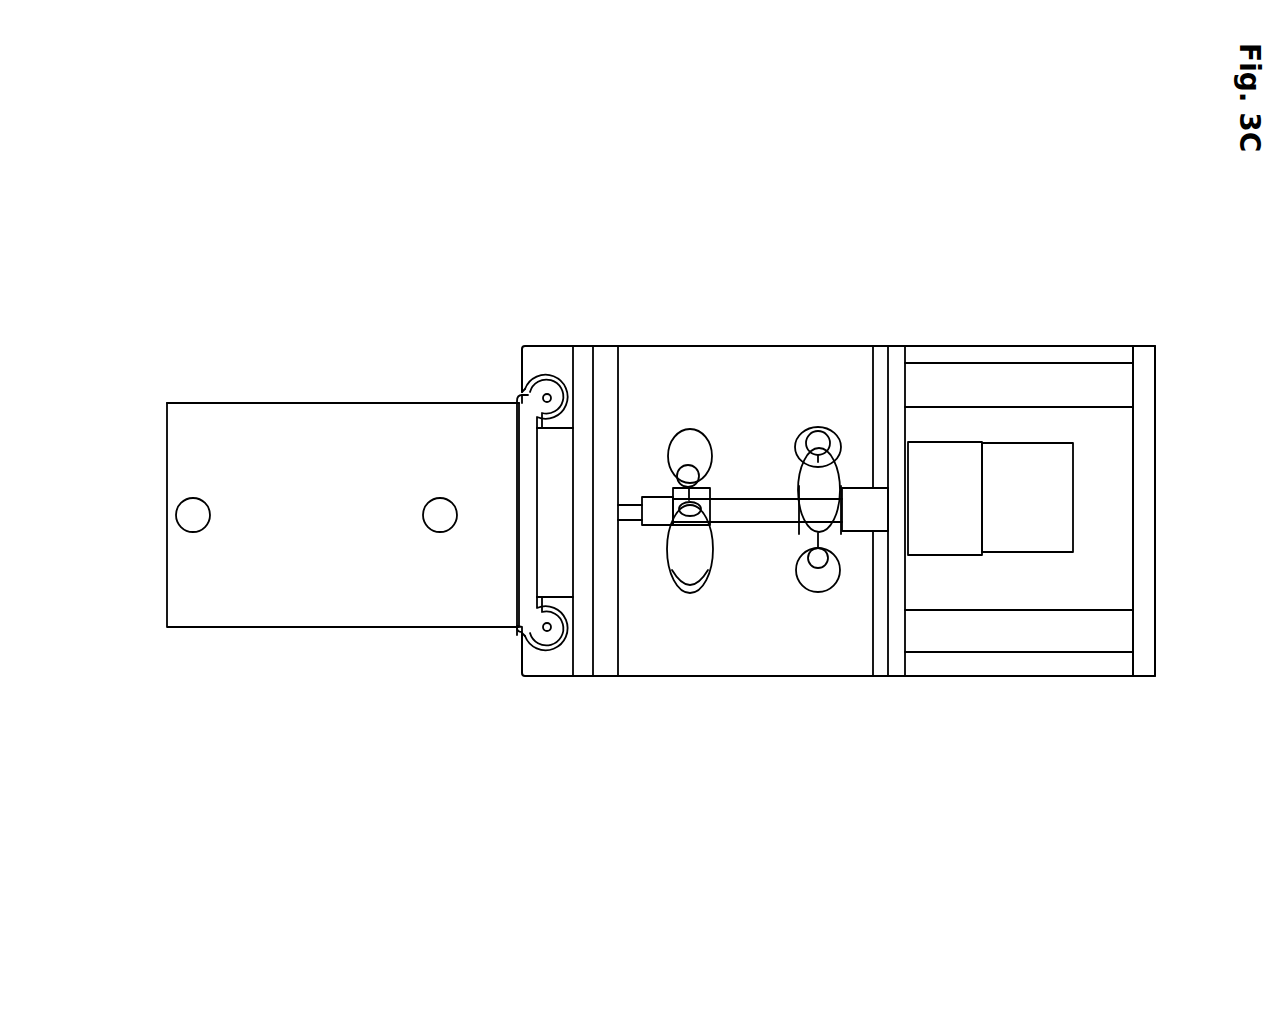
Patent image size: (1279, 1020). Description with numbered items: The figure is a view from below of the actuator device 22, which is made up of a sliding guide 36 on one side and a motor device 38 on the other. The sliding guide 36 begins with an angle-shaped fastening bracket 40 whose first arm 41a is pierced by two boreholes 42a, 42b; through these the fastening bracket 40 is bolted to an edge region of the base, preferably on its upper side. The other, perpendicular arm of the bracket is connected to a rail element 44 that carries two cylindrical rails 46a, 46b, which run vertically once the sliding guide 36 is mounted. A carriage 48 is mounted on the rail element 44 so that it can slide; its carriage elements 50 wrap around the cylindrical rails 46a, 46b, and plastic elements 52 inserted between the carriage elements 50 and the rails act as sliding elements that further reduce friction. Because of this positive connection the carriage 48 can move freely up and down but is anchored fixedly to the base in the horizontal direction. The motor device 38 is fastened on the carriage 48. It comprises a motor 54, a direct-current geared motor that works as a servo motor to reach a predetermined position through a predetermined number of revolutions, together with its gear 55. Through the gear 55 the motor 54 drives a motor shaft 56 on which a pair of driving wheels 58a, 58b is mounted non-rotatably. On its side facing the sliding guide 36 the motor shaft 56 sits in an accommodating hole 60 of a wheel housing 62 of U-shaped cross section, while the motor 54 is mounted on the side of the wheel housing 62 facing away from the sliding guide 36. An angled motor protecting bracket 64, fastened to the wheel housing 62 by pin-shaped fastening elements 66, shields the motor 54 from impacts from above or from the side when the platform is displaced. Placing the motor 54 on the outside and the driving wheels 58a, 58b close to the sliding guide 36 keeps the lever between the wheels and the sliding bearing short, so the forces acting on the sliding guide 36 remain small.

The actuator device 22 is at (1070, 133).
The sliding guide 36 is at (525, 173).
The motor device 38 is at (875, 173).
The fastening bracket 40 is at (329, 410).
The first arm 41a is at (248, 425).
The borehole 42a is at (193, 527).
The borehole 42b is at (430, 527).
The rail element 44 is at (528, 430).
The cylindrical rail 46a is at (548, 397).
The cylindrical rail 46b is at (527, 637).
The carriage 48 is at (584, 667).
The carriage element 50 is at (549, 360).
The plastic element 52 is at (523, 388).
The motor 54 is at (1013, 458).
The gear 55 is at (938, 460).
The motor shaft 56 is at (758, 507).
The driving wheel 58a is at (702, 602).
The driving wheel 58b is at (831, 595).
The accommodating hole 60 is at (620, 503).
The wheel housing 62 is at (610, 665).
The motor protecting bracket 64 is at (1148, 535).
The pin-shaped fastening element 66 is at (1050, 385).